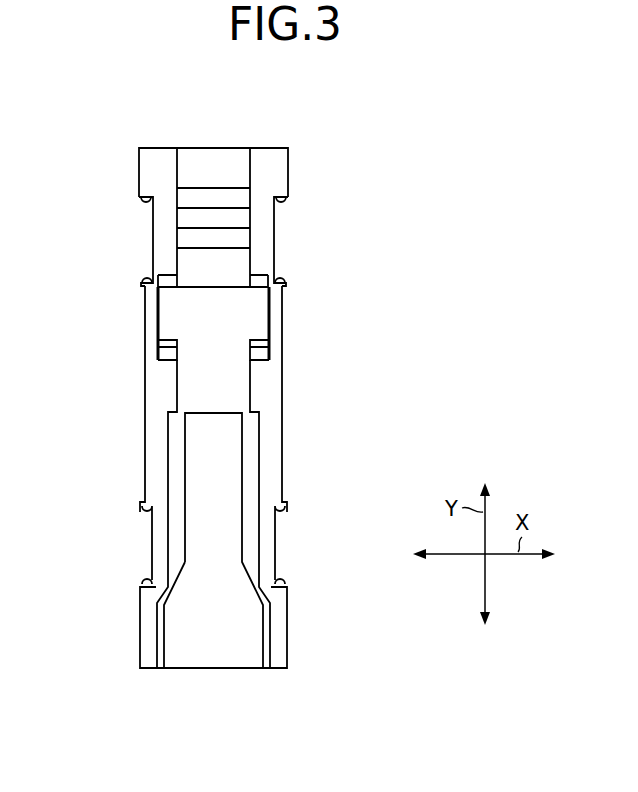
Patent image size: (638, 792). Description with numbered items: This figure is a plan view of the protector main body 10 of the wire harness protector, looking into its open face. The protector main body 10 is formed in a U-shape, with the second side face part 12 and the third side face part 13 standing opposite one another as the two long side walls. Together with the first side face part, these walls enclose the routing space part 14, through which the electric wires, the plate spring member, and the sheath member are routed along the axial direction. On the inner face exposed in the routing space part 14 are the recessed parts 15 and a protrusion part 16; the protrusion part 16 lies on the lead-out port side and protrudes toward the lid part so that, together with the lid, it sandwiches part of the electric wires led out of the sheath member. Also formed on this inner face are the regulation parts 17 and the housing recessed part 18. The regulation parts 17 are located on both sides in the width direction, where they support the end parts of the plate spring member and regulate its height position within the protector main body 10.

The protector main body 10 is at (345, 150).
The second side face part 12 is at (270, 387).
The third side face part 13 is at (156, 387).
The routing space part 14 is at (230, 262).
The recessed parts 15 is at (268, 326).
The protrusion part 16 is at (213, 215).
The regulation parts 17 is at (165, 648).
The housing recessed part 18 is at (212, 636).